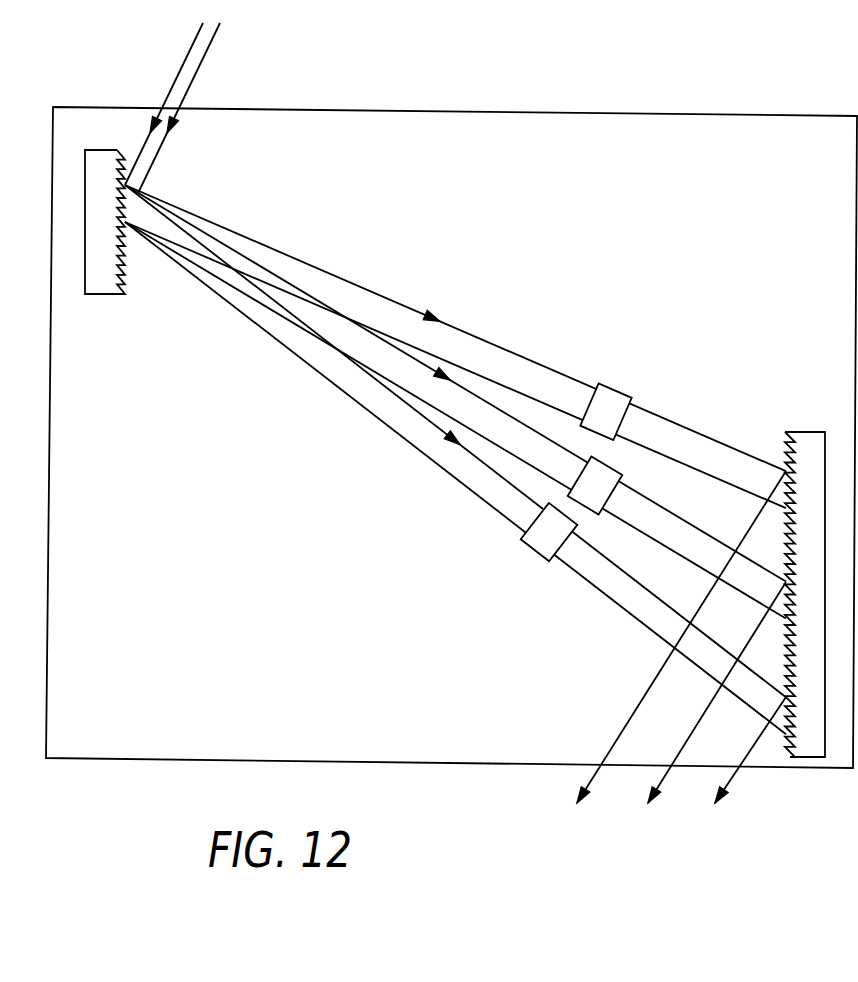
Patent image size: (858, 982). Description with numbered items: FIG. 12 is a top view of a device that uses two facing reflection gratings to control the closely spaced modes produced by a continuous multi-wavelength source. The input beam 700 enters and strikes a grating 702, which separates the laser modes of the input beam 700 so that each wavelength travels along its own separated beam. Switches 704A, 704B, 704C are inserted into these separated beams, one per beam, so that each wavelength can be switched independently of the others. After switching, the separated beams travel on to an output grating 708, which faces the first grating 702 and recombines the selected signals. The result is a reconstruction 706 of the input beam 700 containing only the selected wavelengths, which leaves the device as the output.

The input beam 700 is at (188, 108).
The grating 702 is at (102, 297).
The switch 704A is at (617, 390).
The switch 704B is at (607, 484).
The switch 704C is at (535, 552).
The reconstruction 706 is at (681, 654).
The output grating 708 is at (807, 432).